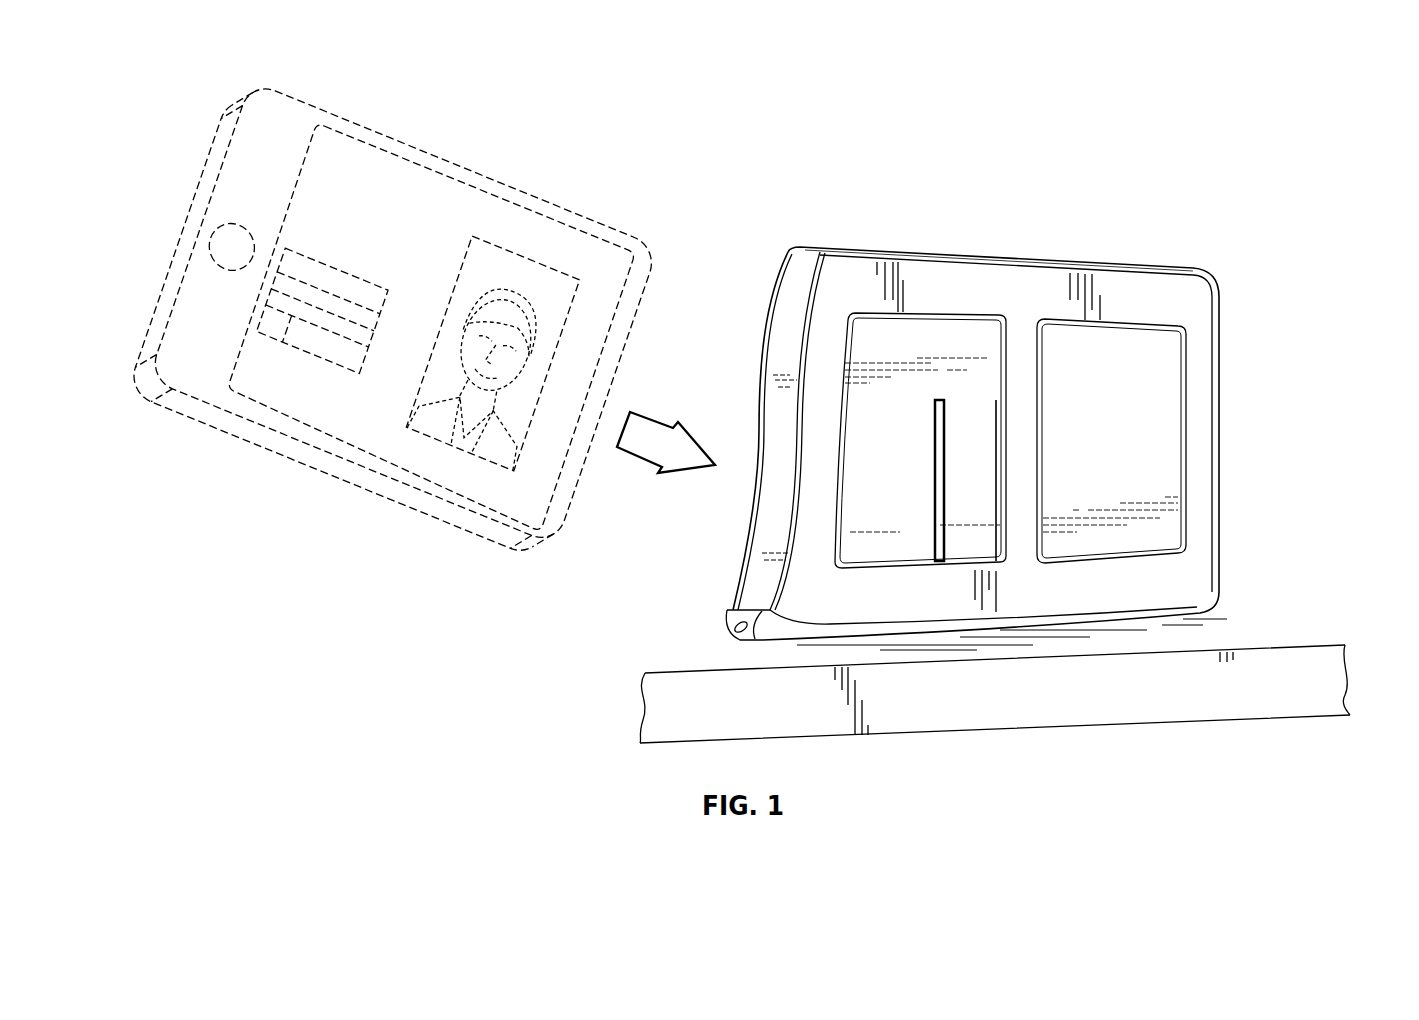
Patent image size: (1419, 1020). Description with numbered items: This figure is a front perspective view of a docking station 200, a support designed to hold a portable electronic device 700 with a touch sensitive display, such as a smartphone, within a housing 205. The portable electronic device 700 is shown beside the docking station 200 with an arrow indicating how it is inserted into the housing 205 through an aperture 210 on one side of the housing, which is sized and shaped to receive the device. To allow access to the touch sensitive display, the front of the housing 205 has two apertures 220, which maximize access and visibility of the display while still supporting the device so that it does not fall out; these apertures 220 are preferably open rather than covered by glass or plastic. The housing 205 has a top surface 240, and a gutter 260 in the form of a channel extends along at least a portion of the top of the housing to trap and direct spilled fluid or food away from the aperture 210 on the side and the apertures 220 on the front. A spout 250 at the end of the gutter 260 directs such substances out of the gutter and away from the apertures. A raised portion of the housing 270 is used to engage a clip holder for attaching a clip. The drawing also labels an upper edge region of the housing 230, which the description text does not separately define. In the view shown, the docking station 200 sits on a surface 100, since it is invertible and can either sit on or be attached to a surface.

The portable electronic device 700 is at (323, 107).
The docking station 200 is at (1324, 238).
The housing 205 is at (1221, 328).
The aperture 210 is at (759, 402).
The second aperture 220 is at (1057, 318).
The top edge 230 is at (1152, 265).
The top surface 240 is at (1165, 616).
The spout 250 is at (728, 609).
The gutter 260 is at (736, 632).
The raised portion of the housing 270 is at (997, 400).
The surface 100 is at (1343, 684).